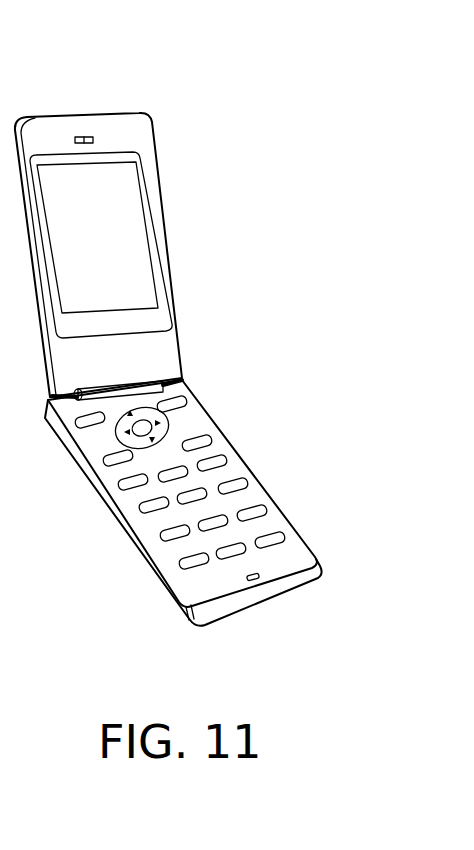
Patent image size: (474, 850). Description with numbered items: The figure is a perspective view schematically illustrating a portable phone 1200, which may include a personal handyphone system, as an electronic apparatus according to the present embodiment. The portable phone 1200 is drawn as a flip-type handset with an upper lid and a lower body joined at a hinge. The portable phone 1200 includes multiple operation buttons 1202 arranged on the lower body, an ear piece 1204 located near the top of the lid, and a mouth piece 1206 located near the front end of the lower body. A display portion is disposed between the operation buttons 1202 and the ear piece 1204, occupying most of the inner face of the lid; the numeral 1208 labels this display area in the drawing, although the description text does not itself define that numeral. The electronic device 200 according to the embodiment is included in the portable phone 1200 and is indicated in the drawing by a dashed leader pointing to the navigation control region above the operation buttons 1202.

The portable phone 1200 is at (184, 81).
The operation buttons 1202 is at (221, 460).
The ear piece 1204 is at (87, 136).
The mouth piece 1206 is at (260, 575).
The display 1208 is at (132, 229).
The electronic device 200 is at (190, 422).